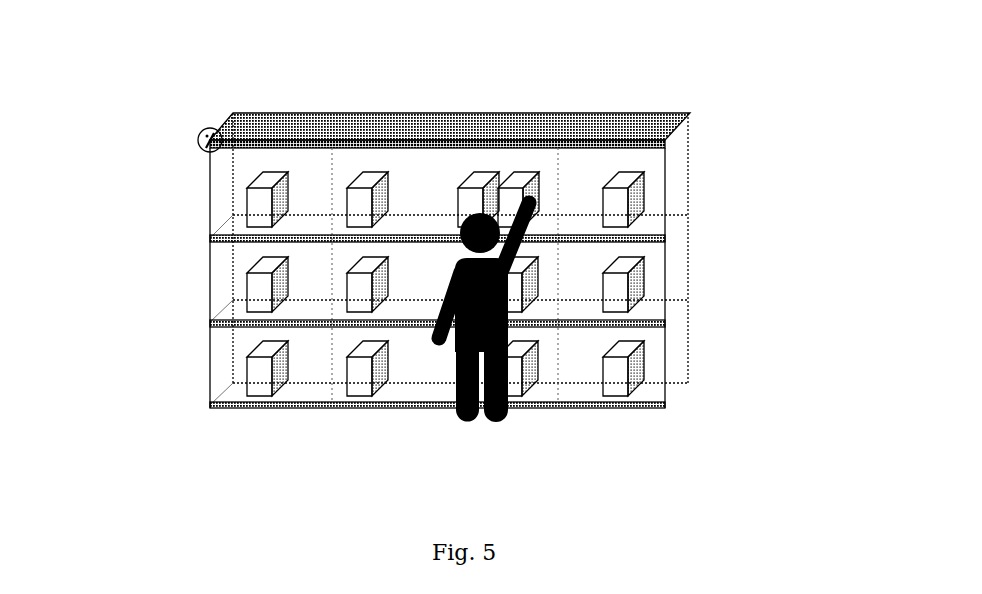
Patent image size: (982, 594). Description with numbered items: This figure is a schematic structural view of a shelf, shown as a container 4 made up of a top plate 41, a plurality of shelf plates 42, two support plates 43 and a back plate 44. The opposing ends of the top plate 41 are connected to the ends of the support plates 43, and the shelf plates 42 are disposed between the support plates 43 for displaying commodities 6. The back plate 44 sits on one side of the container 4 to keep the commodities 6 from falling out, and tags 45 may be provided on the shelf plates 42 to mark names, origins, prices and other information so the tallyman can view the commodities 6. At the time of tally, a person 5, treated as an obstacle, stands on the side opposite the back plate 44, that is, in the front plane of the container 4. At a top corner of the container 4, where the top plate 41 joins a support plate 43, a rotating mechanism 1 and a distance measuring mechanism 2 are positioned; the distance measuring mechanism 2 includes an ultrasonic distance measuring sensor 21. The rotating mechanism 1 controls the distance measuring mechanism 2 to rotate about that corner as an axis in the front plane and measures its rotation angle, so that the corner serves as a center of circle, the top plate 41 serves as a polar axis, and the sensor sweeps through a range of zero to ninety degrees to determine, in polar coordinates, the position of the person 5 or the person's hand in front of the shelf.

The rotating mechanism 1 is at (202, 128).
The distance measuring mechanism 2 is at (199, 136).
The ultrasonic distance measuring sensor 21 is at (207, 150).
The container 4 is at (710, 77).
The top plate 41 is at (492, 127).
The shelf plates 42 is at (643, 227).
The support plates 43 is at (210, 353).
The back plate 44 is at (320, 345).
The tags 45 is at (545, 327).
The person 5 is at (458, 352).
The commodities 6 is at (615, 293).